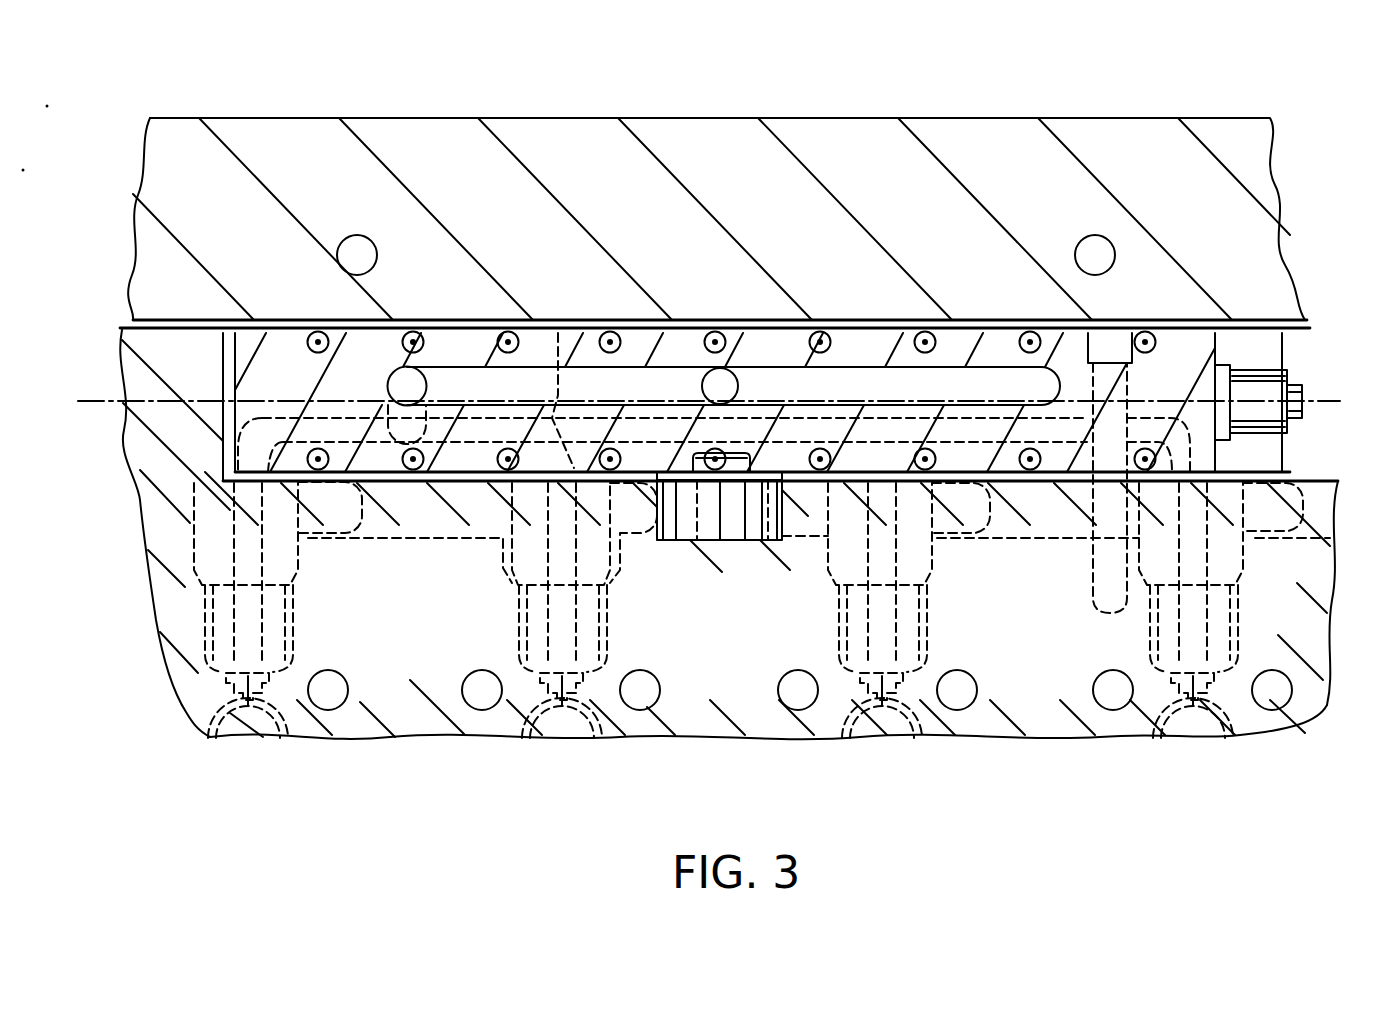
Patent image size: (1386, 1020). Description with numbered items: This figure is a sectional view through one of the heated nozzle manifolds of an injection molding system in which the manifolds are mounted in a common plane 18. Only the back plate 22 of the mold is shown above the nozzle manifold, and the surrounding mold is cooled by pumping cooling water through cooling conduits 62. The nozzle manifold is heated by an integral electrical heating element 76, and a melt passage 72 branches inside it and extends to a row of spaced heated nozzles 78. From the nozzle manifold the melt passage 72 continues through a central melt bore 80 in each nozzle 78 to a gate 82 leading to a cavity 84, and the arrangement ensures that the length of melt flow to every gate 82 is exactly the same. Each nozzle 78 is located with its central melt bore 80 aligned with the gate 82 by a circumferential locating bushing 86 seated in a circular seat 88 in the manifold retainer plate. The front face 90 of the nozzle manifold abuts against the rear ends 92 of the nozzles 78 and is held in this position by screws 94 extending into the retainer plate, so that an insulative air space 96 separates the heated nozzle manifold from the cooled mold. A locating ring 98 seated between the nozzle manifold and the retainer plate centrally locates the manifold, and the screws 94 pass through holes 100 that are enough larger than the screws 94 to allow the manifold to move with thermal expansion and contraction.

The common plane 18 is at (1357, 381).
The back plate 22 is at (697, 143).
The cooling conduits 62 is at (351, 243).
The melt passage 72 is at (558, 333).
The integral electrical heating element 76 is at (511, 332).
The heated nozzles 78 is at (213, 548).
The central melt bore 80 is at (567, 572).
The gate 82 is at (563, 712).
The cavity 84 is at (548, 735).
The circumferential locating bushing 86 is at (930, 577).
The circular seat 88 is at (1148, 568).
The front face 90 is at (447, 470).
The rear ends 92 is at (591, 468).
The screws 94 is at (1118, 332).
The insulative air space 96 is at (850, 330).
The locating ring 98 is at (730, 527).
The holes 100 is at (1108, 382).